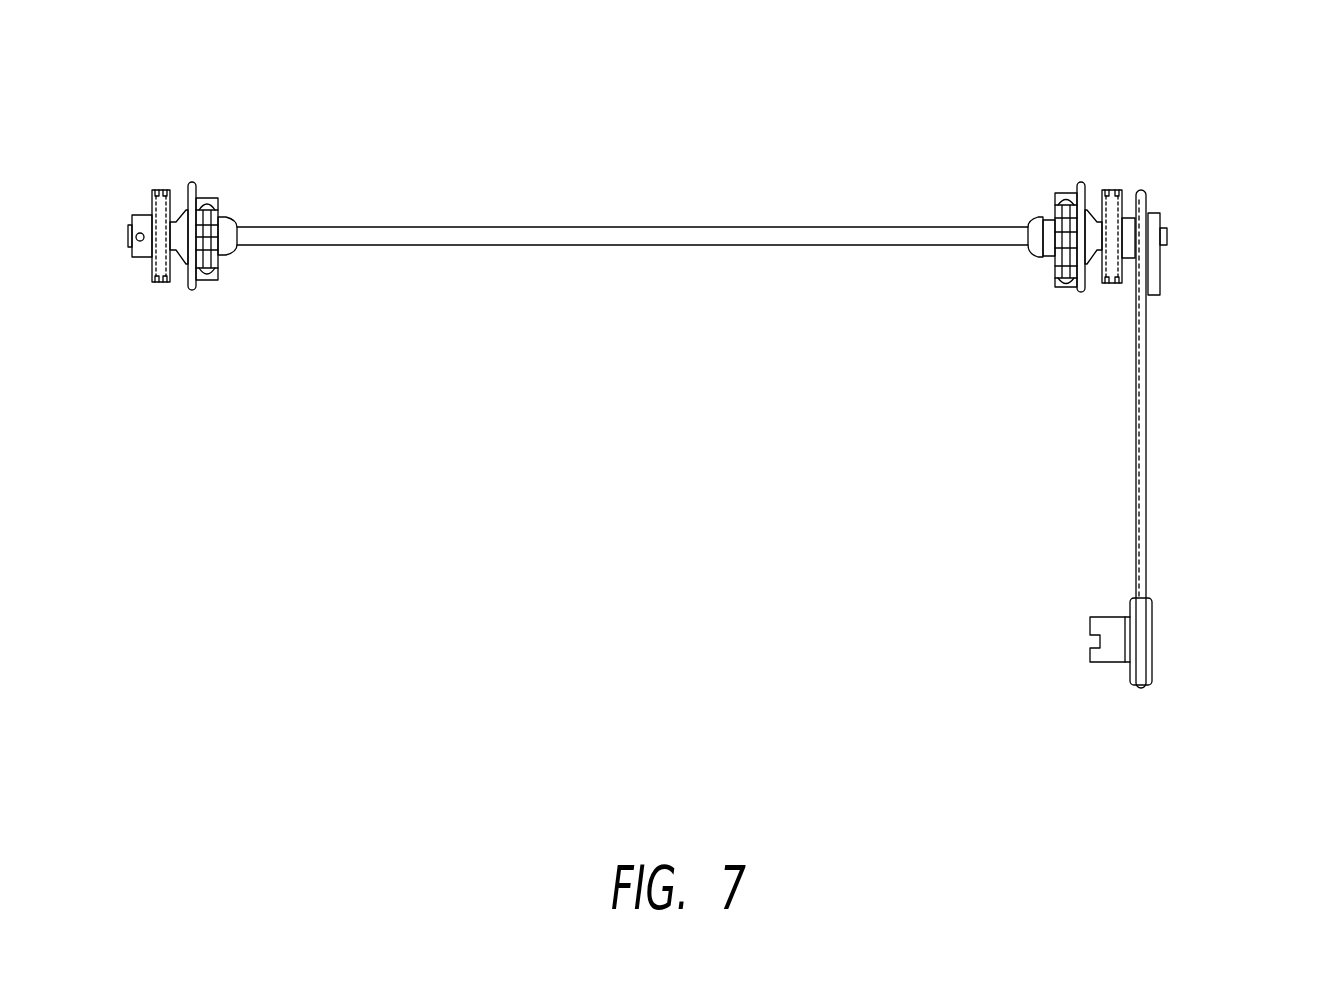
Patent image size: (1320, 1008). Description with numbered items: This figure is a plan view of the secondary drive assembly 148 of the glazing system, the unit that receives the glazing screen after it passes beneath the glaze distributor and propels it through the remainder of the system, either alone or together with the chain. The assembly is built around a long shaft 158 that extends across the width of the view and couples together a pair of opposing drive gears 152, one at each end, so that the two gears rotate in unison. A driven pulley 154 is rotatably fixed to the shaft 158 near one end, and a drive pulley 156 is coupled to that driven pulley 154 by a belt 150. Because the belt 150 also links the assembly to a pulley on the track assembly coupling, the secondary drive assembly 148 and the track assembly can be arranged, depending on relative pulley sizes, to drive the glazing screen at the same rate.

The secondary drive assembly 148 is at (667, 118).
The belt 150 is at (1147, 428).
The opposing drive gears 152 is at (220, 272).
The driven pulley 154 is at (1150, 205).
The drive pulley 156 is at (1151, 620).
The shaft 158 is at (651, 246).